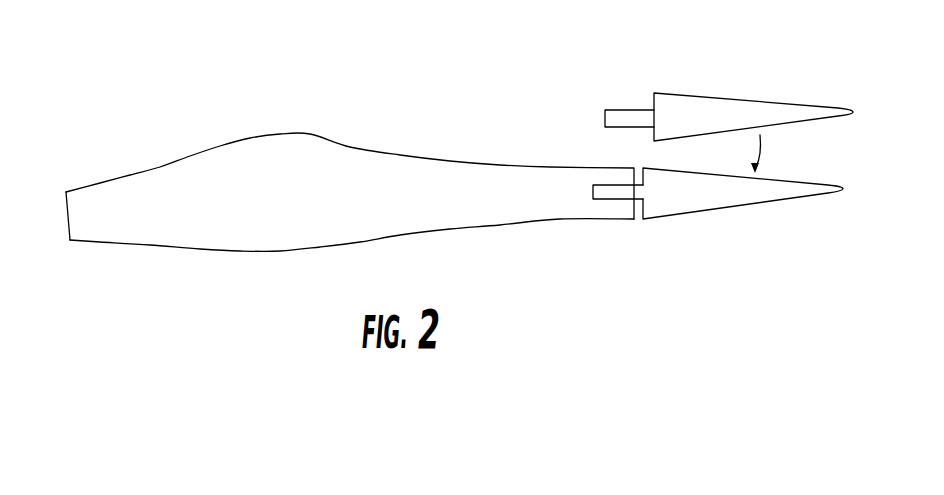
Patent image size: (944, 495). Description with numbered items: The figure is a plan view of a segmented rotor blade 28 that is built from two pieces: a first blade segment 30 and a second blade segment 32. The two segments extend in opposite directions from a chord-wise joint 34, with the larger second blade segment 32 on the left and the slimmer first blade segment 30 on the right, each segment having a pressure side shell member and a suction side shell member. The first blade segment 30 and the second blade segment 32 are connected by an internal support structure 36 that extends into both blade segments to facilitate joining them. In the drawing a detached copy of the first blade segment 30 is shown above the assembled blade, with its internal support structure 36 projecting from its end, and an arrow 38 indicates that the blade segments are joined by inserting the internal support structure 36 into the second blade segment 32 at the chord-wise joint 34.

The rotor blade 28 is at (124, 67).
The first blade segment 30 is at (757, 199).
The second blade segment 32 is at (158, 240).
The chord-wise joint 34 is at (639, 210).
The internal support structure 36 is at (622, 112).
The arrow 38 is at (758, 148).